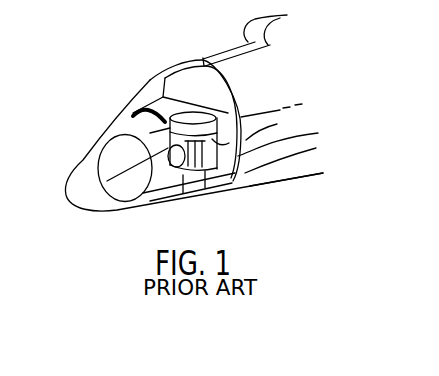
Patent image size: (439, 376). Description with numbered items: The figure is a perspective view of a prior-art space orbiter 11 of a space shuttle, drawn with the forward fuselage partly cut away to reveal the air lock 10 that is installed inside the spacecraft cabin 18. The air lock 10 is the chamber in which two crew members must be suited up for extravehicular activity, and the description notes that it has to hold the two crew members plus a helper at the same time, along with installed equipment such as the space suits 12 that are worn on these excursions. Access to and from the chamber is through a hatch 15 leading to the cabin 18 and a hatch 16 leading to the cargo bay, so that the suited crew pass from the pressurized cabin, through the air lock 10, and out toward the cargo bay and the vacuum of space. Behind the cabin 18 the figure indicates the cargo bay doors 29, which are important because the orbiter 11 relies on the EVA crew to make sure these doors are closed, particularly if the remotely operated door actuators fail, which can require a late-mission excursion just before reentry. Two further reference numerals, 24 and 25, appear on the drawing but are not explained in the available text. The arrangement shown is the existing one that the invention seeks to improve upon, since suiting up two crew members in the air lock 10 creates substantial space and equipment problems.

The air lock 10 is at (190, 180).
The space orbiter 11 is at (80, 180).
The space suits 12 is at (300, 179).
The hatch to cabin 15 is at (178, 158).
The hatch to cargo bay 16 is at (305, 139).
The cabin 18 is at (145, 87).
The panel 24 is at (275, 126).
The side line 25 is at (280, 160).
The cargo bay doors 29 is at (280, 24).